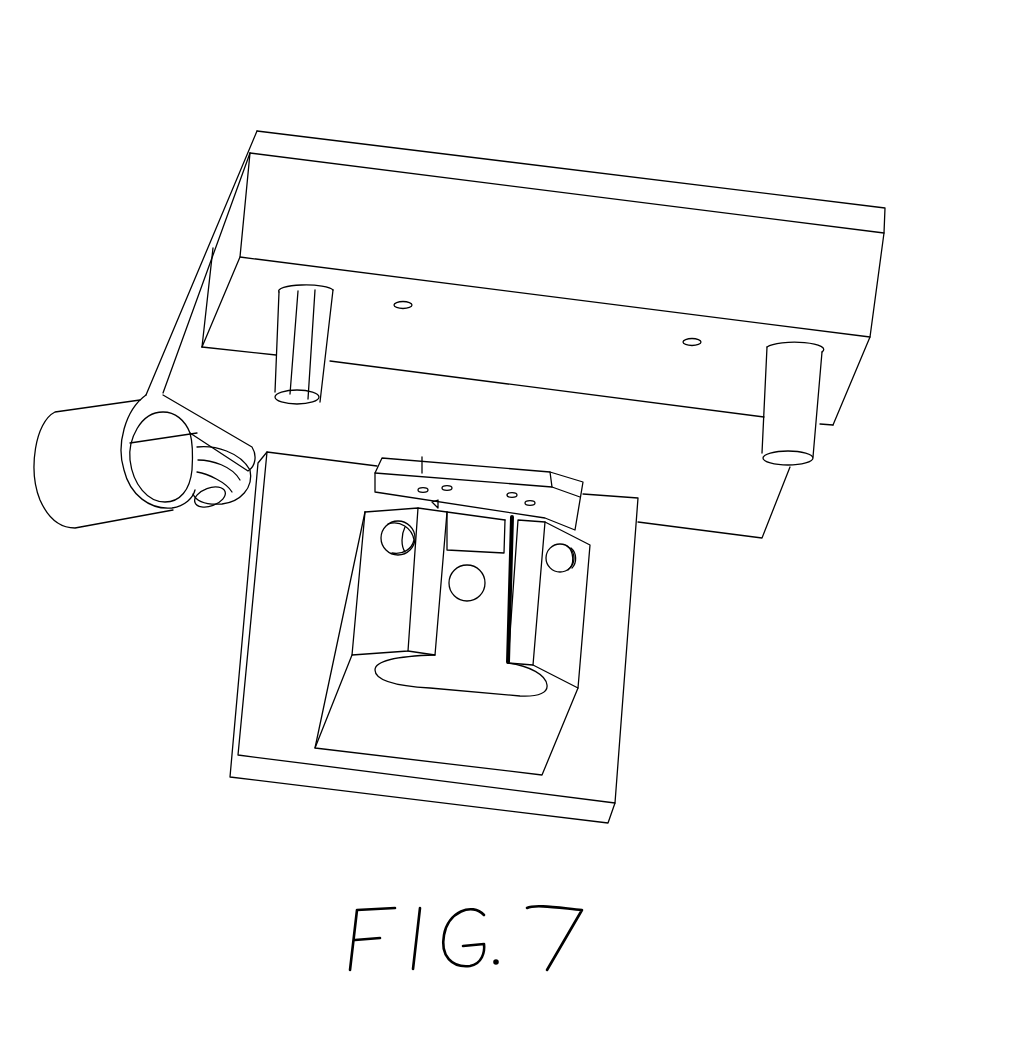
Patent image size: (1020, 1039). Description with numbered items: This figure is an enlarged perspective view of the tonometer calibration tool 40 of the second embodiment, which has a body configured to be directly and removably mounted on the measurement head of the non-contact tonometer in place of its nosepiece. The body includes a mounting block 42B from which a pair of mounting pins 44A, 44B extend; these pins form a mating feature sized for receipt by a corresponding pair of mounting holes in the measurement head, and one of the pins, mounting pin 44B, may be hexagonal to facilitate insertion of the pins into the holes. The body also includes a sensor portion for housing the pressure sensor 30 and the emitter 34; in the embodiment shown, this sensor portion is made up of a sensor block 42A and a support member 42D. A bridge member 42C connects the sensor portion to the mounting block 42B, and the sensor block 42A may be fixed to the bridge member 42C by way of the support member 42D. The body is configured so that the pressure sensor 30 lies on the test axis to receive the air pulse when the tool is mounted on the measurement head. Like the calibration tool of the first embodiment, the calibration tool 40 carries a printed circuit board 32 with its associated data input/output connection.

The tonometer calibration tool 40 is at (574, 122).
The sensor block 42A is at (535, 737).
The mounting block 42B is at (556, 269).
The bridge member 42C is at (180, 308).
The support member 42D is at (275, 773).
The mounting pin 44A is at (802, 433).
The mounting pin 44B is at (318, 377).
The printed circuit board 32 is at (496, 471).
The emitter 34 is at (397, 537).
The pressure sensor 30 is at (466, 583).